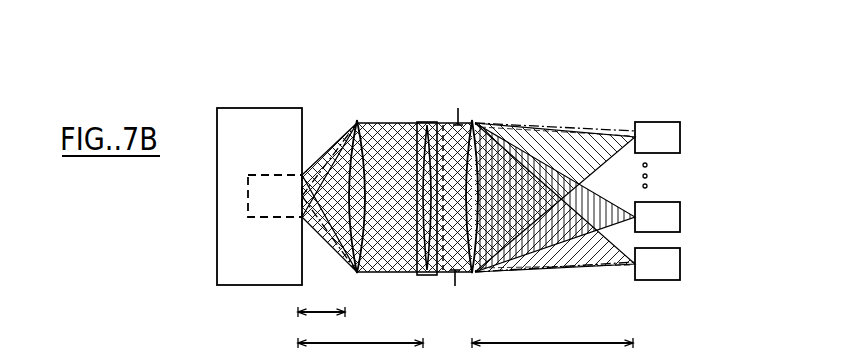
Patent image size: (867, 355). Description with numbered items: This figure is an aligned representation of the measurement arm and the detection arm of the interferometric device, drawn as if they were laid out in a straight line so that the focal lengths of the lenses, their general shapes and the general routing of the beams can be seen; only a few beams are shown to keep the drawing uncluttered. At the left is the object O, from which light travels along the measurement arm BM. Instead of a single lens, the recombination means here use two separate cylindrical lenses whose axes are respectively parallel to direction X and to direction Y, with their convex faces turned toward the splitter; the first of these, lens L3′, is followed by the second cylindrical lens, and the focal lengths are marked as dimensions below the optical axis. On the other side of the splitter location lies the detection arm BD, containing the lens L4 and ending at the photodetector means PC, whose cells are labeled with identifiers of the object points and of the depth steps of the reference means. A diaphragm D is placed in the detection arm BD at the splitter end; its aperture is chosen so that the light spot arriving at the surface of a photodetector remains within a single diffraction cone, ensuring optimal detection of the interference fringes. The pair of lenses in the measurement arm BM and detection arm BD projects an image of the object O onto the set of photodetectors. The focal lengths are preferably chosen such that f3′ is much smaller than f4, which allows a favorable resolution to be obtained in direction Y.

The object O is at (270, 95).
The first cylindrical lens L3′ is at (352, 180).
The measurement arm BM is at (382, 96).
The diaphragm D is at (456, 280).
The lens L4 is at (483, 180).
The detection arm BD is at (554, 110).
The photodetector means PC is at (676, 106).
The focal length of lens L3′ f3′ is at (321, 298).
The focal length of lens L4 f4 is at (552, 329).